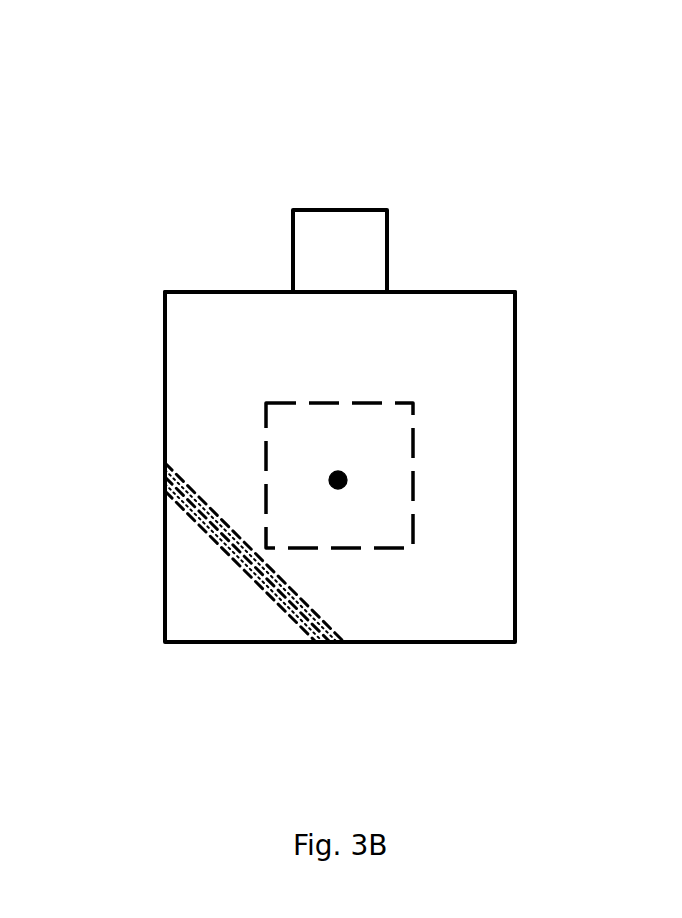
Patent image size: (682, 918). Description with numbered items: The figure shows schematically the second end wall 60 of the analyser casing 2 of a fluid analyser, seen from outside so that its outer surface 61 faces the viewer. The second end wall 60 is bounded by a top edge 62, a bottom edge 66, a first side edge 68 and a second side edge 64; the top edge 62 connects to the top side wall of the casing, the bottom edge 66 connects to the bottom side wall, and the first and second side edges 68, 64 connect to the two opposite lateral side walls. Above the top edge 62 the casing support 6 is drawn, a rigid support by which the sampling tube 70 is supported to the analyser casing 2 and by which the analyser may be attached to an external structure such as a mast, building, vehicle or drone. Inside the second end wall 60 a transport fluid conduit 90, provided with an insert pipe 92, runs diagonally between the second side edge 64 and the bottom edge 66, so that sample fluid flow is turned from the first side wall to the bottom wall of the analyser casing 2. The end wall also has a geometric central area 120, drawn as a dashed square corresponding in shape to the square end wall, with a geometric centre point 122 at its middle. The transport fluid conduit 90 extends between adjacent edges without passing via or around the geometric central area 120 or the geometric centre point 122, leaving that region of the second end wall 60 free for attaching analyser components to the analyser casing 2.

The analyser casing 2 is at (438, 168).
The casing support 6 is at (293, 240).
The second end wall 60 is at (515, 644).
The outer surface 61 is at (468, 547).
The top edge 62 is at (203, 292).
The second side edge 64 is at (164, 373).
The bottom edge 66 is at (437, 645).
The first side edge 68 is at (516, 334).
The sampling tube 70 is at (338, 209).
The transport fluid conduit 90 is at (225, 550).
The insert pipe 92 is at (275, 600).
The geometric central area 120 is at (413, 460).
The geometric centre point 122 is at (332, 476).